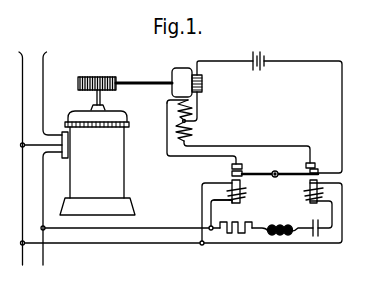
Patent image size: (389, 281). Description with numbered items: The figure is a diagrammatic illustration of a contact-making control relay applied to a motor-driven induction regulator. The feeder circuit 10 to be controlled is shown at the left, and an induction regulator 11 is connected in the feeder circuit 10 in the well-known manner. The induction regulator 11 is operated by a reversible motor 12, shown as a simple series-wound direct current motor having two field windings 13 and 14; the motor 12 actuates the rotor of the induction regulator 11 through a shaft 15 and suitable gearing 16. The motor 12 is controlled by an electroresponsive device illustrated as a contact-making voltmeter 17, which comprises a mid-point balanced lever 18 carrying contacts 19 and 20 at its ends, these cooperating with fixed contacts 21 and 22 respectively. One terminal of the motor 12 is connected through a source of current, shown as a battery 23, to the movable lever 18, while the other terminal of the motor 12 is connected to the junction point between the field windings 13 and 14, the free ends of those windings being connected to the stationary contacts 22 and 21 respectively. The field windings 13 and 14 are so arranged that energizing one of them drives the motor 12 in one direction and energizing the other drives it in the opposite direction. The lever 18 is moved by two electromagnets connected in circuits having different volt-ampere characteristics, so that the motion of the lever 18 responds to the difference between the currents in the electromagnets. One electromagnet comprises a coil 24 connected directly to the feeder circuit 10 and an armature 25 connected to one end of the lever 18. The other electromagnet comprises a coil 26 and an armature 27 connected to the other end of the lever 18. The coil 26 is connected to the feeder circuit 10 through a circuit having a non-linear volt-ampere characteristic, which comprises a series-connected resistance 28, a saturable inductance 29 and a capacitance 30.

The feeder circuit 10 is at (33, 56).
The induction regulator 11 is at (126, 165).
The reversible motor 12 is at (180, 68).
The field winding 13 is at (195, 110).
The field winding 14 is at (197, 131).
The shaft 15 is at (137, 80).
The gearing 16 is at (90, 77).
The contact-making voltmeter 17 is at (282, 164).
The mid-point balanced lever 18 is at (304, 188).
The contact 19 is at (317, 172).
The contact 20 is at (232, 174).
The fixed contact 21 is at (306, 166).
The fixed contact 22 is at (243, 167).
The battery 23 is at (269, 51).
The coil 24 is at (241, 196).
The armature 25 is at (233, 203).
The coil 26 is at (308, 198).
The armature 27 is at (314, 202).
The resistance 28 is at (236, 234).
The saturable inductance 29 is at (278, 236).
The capacitance 30 is at (313, 238).